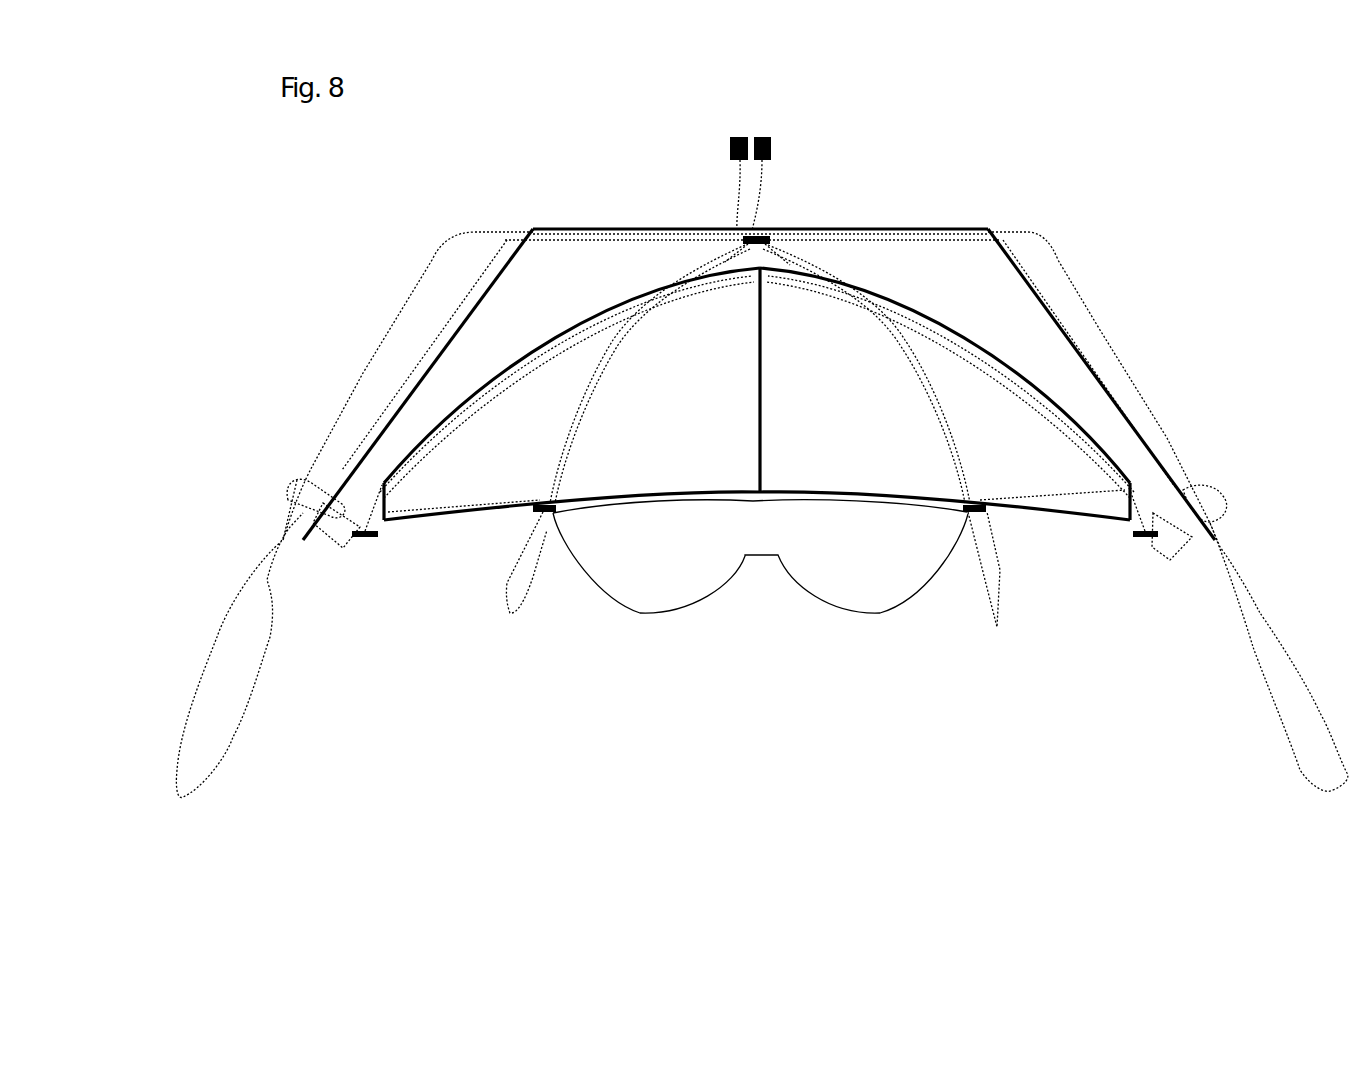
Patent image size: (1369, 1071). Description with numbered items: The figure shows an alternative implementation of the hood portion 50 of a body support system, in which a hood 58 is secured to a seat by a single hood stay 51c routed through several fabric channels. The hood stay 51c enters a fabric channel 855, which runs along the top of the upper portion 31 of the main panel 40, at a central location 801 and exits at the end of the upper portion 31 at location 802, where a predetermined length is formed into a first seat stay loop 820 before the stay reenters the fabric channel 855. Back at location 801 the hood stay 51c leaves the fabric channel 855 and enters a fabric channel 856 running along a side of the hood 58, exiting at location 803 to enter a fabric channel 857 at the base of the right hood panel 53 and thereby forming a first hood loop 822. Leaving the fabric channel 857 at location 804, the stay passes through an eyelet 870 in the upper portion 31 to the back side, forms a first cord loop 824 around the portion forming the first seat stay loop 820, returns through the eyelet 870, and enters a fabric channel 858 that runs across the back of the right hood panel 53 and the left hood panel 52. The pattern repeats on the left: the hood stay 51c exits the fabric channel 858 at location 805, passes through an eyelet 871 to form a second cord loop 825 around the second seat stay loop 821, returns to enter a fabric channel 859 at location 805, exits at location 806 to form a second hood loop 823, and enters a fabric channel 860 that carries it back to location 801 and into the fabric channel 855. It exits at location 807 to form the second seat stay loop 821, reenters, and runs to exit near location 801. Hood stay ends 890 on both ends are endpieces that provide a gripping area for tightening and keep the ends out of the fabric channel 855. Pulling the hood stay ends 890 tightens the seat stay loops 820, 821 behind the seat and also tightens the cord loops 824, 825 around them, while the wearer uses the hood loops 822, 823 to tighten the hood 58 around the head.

The hood stay ends 890 is at (763, 130).
The fabric channel 855 is at (590, 230).
The hood stay 51c is at (727, 197).
The central location 801 is at (760, 230).
The location 802 is at (510, 222).
The location 807 is at (990, 218).
The hood portion 50 is at (985, 330).
The main panel 40 is at (365, 440).
The upper portion 31 is at (752, 274).
The fabric channel 858 is at (491, 405).
The fabric channel 856 is at (600, 390).
The fabric channel 860 is at (866, 374).
The hood 58 is at (572, 394).
The left hood panel 52 is at (945, 394).
The right hood panel 53 is at (757, 479).
The fabric channel 857 is at (437, 512).
The fabric channel 859 is at (1060, 508).
The location 803 is at (520, 515).
The location 806 is at (987, 520).
The location 804 is at (375, 530).
The location 805 is at (1128, 493).
The first cord loop 824 is at (315, 485).
The second cord loop 825 is at (1225, 505).
The eyelet 870 is at (345, 548).
The eyelet 871 is at (1148, 540).
The first hood loop 822 is at (518, 618).
The second hood loop 823 is at (998, 625).
The first seat stay loop 820 is at (240, 740).
The second seat stay loop 821 is at (1325, 775).